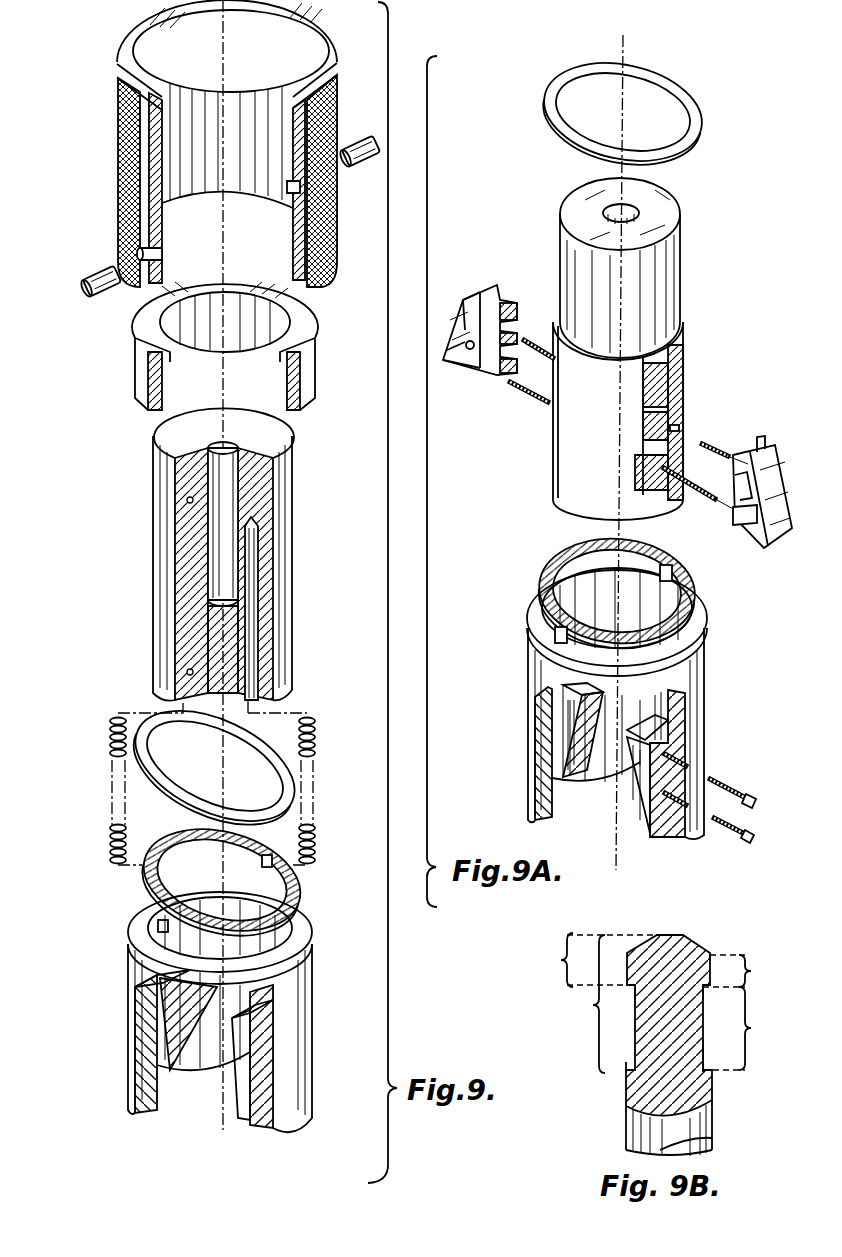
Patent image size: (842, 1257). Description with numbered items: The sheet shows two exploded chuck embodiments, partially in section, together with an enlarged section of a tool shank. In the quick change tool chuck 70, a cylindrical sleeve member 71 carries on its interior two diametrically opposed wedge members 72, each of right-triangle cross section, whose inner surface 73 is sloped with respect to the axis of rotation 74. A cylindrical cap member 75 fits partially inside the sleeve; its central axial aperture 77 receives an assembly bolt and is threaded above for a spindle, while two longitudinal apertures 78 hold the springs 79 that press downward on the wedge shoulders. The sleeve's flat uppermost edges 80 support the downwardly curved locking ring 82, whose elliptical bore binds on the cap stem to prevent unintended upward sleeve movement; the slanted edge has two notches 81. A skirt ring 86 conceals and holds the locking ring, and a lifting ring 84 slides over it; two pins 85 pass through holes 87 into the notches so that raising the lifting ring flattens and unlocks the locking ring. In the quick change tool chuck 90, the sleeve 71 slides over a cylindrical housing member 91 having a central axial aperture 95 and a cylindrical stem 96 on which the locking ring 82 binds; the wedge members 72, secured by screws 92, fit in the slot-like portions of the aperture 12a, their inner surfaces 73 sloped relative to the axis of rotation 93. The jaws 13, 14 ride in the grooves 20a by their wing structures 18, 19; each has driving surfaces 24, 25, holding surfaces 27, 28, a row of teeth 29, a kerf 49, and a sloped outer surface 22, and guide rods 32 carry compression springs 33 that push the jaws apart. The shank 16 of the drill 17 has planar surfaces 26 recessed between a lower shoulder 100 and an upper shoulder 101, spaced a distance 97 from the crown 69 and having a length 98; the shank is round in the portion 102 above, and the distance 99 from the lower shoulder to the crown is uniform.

In FIG. 9, the lifting ring 84 is at (118, 103).
In FIG. 9, the pins 85 is at (348, 142).
In FIG. 9, the skirt ring 86 is at (133, 337).
In FIG. 9, the holes 87 is at (150, 383).
In FIG. 9, the quick change tool chuck 70 is at (204, 554).
In FIG. 9, the cylindrical cap member 75 is at (290, 559).
In FIG. 9, the central axial aperture 77 is at (232, 479).
In FIG. 9, the longitudinal apertures 78 is at (254, 628).
In FIG. 9, the locking ring 82 is at (268, 750).
In FIG. 9A, the locking ring 82 is at (700, 111).
In FIG. 9, the springs 79 is at (112, 791).
In FIG. 9, the notches 81 is at (270, 862).
In FIG. 9A, the notches 81 is at (674, 572).
In FIG. 9, the uppermost edges 80 is at (293, 924).
In FIG. 9A, the uppermost edges 80 is at (567, 552).
In FIG. 9, the wedge members 72 is at (167, 1008).
In FIG. 9A, the wedge members 72 is at (568, 721).
In FIG. 9, the inner surface 73 is at (187, 1030).
In FIG. 9A, the inner surface 73 is at (578, 779).
In FIG. 9, the axis of rotation 74 is at (217, 1128).
In FIG. 9A, the axis of rotation 93 is at (628, 46).
In FIG. 9A, the central axial aperture 95 is at (629, 206).
In FIG. 9A, the cylindrical stem 96 is at (640, 267).
In FIG. 9A, the quick change tool chuck 90 is at (641, 348).
In FIG. 9A, the cylindrical housing member 91 is at (619, 421).
In FIG. 9A, the aperture 12a is at (672, 373).
In FIG. 9A, the grooves 20a is at (680, 428).
In FIG. 9A, the jaw 13 is at (491, 334).
In FIG. 9A, the planar driving surface 24 is at (474, 303).
In FIG. 9A, the planar driving surface 25 is at (506, 312).
In FIG. 9A, the planar holding surface 28 is at (512, 368).
In FIG. 9A, the planar holding surface 27 is at (495, 382).
In FIG. 9A, the row of teeth 29 is at (480, 358).
In FIG. 9A, the wing structure 18 is at (474, 342).
In FIG. 9A, the guide rods 32 is at (525, 338).
In FIG. 9A, the compression springs 33 is at (717, 440).
In FIG. 9A, the jaw 14 is at (749, 507).
In FIG. 9A, the outer surface 22 is at (770, 533).
In FIG. 9A, the kerf 49 is at (762, 443).
In FIG. 9A, the wing structure 19 is at (736, 523).
In FIG. 9A, the cylindrical sleeve member 71 is at (705, 687).
In FIG. 9A, the screws 92 is at (744, 797).
In FIG. 9B, the shank 16 is at (672, 1093).
In FIG. 9B, the drill 17 is at (724, 1140).
In FIG. 9B, the crown 69 is at (680, 935).
In FIG. 9B, the distance 97 is at (593, 960).
In FIG. 9B, the distance 99 is at (581, 1004).
In FIG. 9B, the portion 102 is at (747, 971).
In FIG. 9B, the length 98 is at (742, 1028).
In FIG. 9B, the upper shoulder 101 is at (705, 1001).
In FIG. 9B, the planar surfaces 26 is at (704, 1052).
In FIG. 9B, the lower shoulder 100 is at (712, 1072).